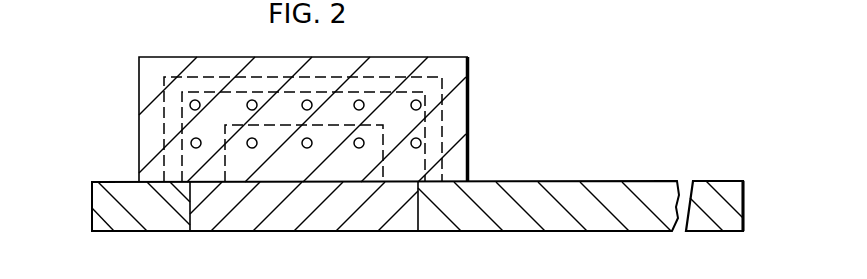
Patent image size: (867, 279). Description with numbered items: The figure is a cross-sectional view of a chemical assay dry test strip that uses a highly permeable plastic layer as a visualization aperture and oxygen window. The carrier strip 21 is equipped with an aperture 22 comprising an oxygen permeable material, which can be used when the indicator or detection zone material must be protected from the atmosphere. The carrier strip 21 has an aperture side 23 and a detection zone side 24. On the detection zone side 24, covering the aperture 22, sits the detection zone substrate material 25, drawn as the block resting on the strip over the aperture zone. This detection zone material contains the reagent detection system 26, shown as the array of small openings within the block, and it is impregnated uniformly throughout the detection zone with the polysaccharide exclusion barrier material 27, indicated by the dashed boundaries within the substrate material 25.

The carrier strip 21 is at (543, 181).
The aperture 22 is at (399, 217).
The aperture side 23 is at (116, 221).
The detection zone side 24 is at (126, 178).
The detection zone substrate material 25 is at (460, 57).
The reagent detection system 26 is at (244, 87).
The polysaccharide exclusion barrier material 27 is at (445, 123).